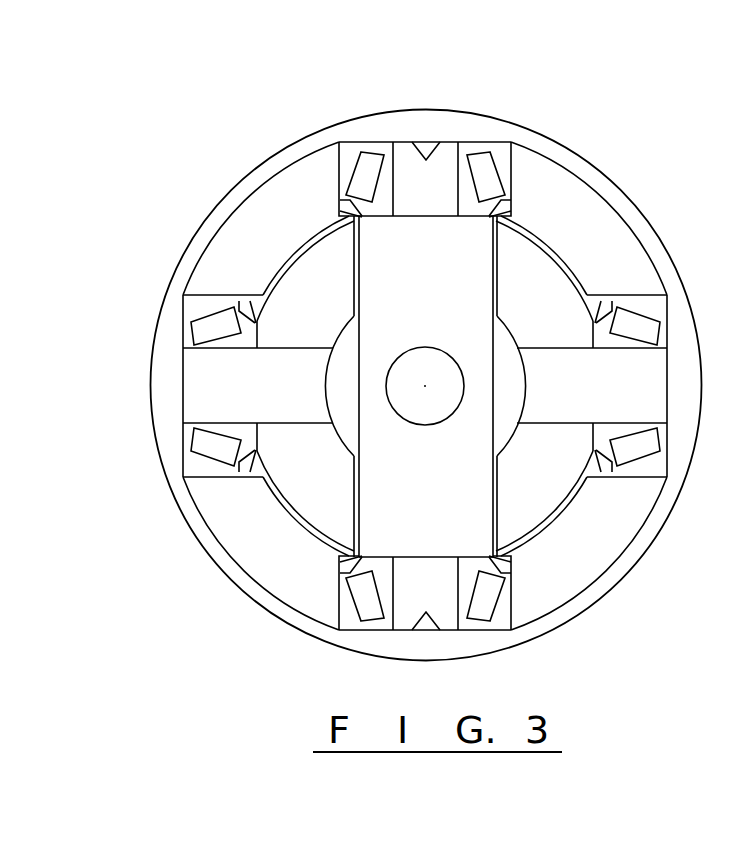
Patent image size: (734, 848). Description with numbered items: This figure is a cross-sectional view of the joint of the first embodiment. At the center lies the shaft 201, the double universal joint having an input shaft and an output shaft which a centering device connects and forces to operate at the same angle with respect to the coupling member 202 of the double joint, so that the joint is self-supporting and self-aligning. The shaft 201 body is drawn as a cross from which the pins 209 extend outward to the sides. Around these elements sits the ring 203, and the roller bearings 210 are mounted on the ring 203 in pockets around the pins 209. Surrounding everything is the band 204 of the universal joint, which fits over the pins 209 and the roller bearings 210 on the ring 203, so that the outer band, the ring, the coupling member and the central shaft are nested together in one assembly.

The shaft 201 is at (453, 240).
The coupling member 202 is at (545, 478).
The ring 203 is at (260, 526).
The band 204 is at (328, 647).
The pin 209 is at (232, 384).
The roller bearing 210 is at (368, 170).